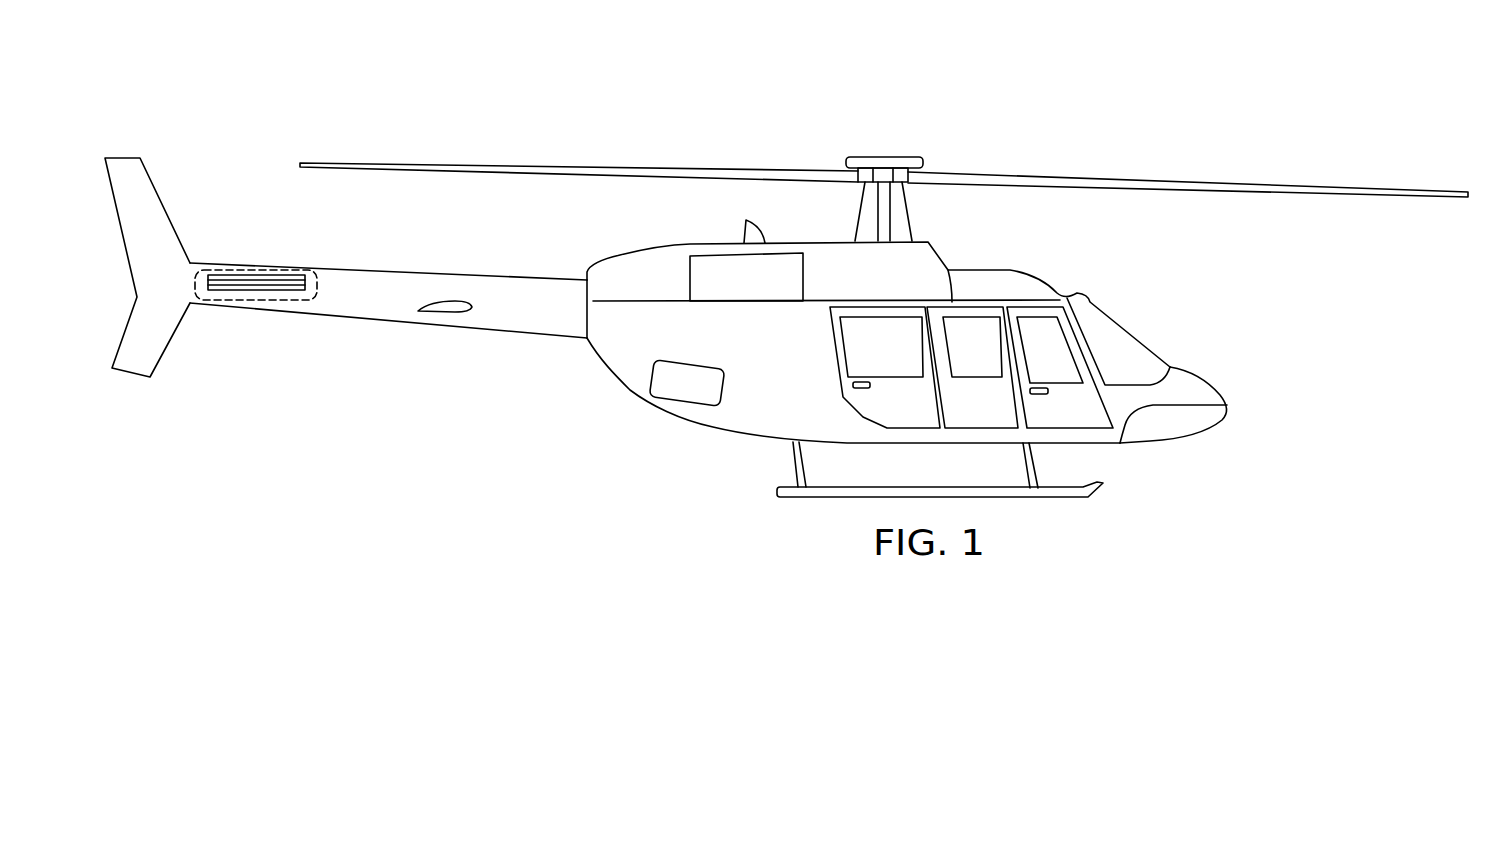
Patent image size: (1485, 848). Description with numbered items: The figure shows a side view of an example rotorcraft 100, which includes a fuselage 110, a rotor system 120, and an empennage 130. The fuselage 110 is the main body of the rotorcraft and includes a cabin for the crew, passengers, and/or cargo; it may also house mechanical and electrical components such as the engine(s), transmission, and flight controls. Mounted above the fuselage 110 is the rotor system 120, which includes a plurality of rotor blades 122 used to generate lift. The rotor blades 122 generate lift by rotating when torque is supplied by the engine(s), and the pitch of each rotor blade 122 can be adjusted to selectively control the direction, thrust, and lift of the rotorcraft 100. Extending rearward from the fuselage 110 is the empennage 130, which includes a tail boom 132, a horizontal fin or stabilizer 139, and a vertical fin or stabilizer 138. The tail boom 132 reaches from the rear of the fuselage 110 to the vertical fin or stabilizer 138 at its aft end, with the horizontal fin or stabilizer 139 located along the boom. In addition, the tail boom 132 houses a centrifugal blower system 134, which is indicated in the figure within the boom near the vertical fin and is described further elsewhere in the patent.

The rotorcraft 100 is at (1116, 88).
The fuselage 110 is at (995, 268).
The rotor system 120 is at (882, 157).
The rotor blades 122 is at (642, 168).
The empennage 130 is at (357, 392).
The tail boom 132 is at (362, 280).
The centrifugal blower system 134 is at (249, 251).
The vertical fin or stabilizer 138 is at (128, 167).
The horizontal fin or stabilizer 139 is at (445, 316).